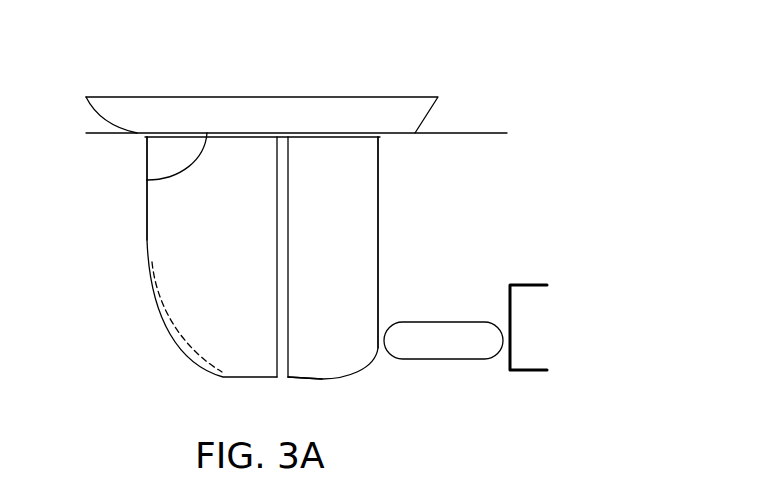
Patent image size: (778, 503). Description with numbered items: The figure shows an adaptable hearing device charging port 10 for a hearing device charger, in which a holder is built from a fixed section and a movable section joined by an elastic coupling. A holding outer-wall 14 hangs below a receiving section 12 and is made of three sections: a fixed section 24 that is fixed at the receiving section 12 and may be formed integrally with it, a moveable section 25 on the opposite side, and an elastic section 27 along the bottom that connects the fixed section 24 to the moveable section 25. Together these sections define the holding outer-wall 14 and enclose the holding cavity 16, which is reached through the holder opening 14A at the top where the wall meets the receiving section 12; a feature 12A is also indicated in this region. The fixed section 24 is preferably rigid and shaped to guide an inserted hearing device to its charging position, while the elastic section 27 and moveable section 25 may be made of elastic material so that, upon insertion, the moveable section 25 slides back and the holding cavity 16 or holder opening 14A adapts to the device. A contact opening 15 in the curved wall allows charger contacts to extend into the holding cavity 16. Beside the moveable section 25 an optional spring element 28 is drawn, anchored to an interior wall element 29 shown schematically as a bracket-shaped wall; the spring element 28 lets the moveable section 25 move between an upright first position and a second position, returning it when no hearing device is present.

The adaptable hearing device charging port 10 is at (402, 62).
The receiving section 12 is at (432, 117).
The hook portion of plate 12A is at (207, 133).
The holding outer-wall 14 is at (378, 292).
The holder opening 14A is at (147, 178).
The contact opening 15 is at (197, 330).
The holding cavity 16 is at (220, 262).
The fixed section 24 is at (147, 229).
The moveable section 25 is at (378, 229).
The elastic section 27 is at (292, 364).
The spring element 28 is at (477, 357).
The interior wall element 29 is at (533, 359).